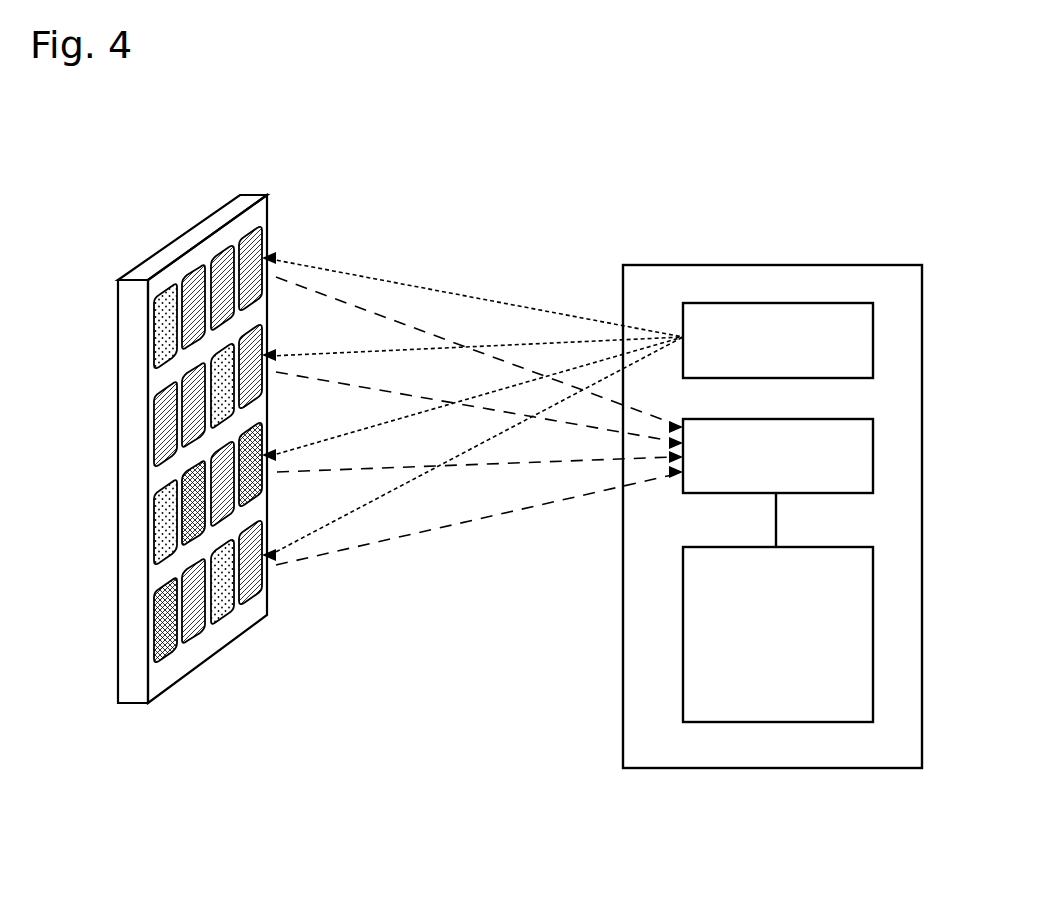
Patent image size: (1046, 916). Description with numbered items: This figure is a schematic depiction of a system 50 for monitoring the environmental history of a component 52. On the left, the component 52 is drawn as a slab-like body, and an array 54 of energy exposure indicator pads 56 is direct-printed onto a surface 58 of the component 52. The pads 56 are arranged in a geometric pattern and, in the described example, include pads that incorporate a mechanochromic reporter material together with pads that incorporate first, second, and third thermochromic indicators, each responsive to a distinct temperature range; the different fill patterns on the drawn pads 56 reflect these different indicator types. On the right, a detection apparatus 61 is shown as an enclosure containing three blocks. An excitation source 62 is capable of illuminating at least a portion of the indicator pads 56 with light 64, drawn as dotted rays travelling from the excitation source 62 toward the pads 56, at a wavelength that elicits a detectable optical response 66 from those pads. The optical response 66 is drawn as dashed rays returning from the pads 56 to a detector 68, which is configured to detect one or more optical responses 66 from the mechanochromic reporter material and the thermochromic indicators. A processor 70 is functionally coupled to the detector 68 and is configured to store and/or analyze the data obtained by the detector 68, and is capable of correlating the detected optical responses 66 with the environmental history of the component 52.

The system 50 is at (600, 92).
The component 52 is at (258, 468).
The array 54 is at (203, 451).
The energy exposure indicator pads 56 is at (245, 227).
The surface 58 is at (257, 218).
The detection apparatus 61 is at (772, 487).
The excitation source 62 is at (729, 345).
The light 64 is at (450, 292).
The optical response 66 is at (372, 543).
The detector 68 is at (729, 461).
The processor 70 is at (729, 589).